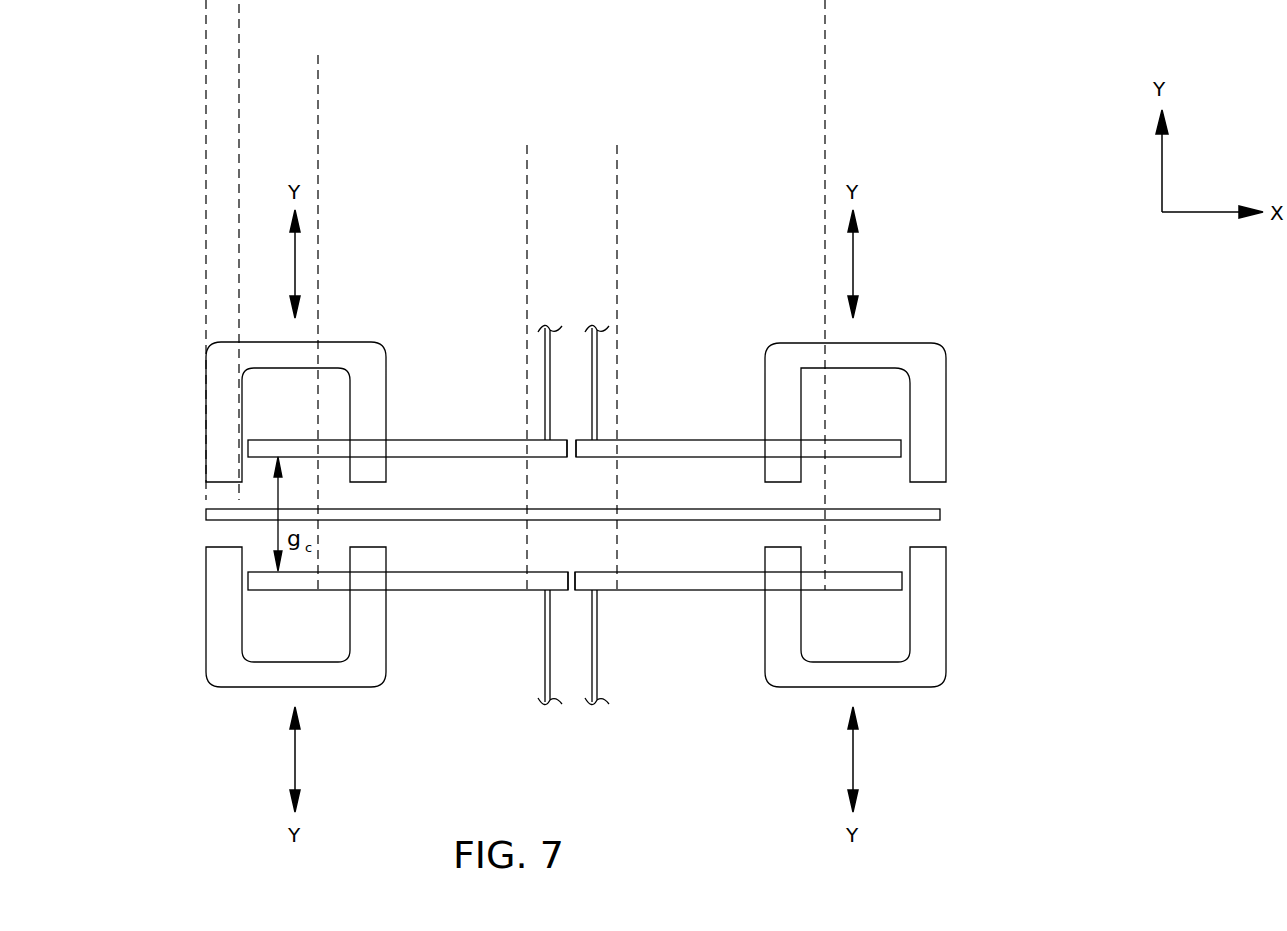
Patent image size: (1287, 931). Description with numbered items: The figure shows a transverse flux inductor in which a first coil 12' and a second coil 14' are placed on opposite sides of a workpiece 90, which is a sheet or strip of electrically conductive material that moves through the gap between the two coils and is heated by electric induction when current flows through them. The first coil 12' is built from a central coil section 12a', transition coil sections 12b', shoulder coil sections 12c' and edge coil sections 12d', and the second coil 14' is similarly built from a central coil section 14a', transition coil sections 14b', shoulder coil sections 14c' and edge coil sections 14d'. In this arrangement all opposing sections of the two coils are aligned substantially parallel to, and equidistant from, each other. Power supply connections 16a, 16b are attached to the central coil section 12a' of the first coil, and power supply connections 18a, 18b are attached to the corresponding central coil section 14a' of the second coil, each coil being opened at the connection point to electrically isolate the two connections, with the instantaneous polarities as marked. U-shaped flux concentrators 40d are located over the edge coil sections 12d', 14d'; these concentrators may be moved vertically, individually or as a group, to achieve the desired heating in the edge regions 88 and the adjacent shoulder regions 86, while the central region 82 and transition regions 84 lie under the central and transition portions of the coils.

The first coil 12' is at (636, 496).
The second coil 14' is at (529, 615).
The central coil section 12a' is at (572, 471).
The transition coil section 12b' is at (574, 382).
The shoulder coil section 12c' is at (575, 395).
The edge coil section 12d' is at (593, 392).
The central coil section 14a' is at (572, 559).
The transition coil section 14b' is at (575, 615).
The shoulder coil section 14c' is at (575, 614).
The edge coil section 14d' is at (577, 620).
The power supply connection 16a is at (595, 378).
The power supply connection 16b is at (548, 378).
The power supply connection 18a is at (594, 672).
The power supply connection 18b is at (548, 672).
The U-shaped flux concentrator 40d is at (221, 437).
The workpiece 90 is at (940, 513).
The central region 82 is at (617, 157).
The transition region 84 is at (527, 233).
The shoulder region 86 is at (239, 95).
The edge region 88 is at (157, 30).